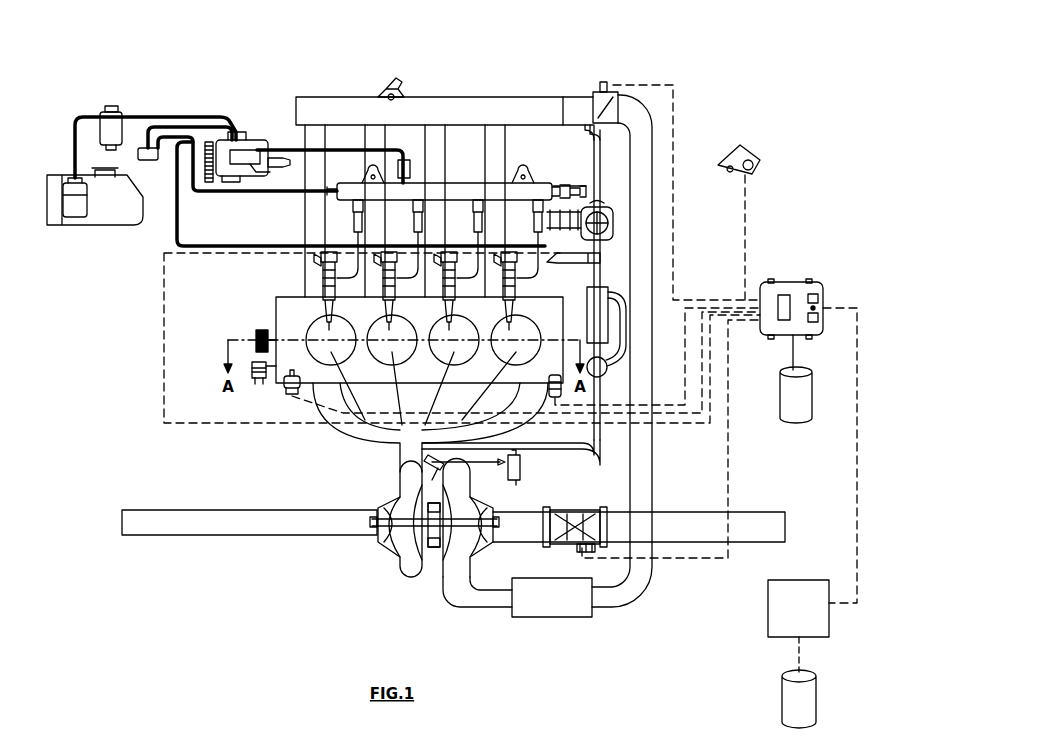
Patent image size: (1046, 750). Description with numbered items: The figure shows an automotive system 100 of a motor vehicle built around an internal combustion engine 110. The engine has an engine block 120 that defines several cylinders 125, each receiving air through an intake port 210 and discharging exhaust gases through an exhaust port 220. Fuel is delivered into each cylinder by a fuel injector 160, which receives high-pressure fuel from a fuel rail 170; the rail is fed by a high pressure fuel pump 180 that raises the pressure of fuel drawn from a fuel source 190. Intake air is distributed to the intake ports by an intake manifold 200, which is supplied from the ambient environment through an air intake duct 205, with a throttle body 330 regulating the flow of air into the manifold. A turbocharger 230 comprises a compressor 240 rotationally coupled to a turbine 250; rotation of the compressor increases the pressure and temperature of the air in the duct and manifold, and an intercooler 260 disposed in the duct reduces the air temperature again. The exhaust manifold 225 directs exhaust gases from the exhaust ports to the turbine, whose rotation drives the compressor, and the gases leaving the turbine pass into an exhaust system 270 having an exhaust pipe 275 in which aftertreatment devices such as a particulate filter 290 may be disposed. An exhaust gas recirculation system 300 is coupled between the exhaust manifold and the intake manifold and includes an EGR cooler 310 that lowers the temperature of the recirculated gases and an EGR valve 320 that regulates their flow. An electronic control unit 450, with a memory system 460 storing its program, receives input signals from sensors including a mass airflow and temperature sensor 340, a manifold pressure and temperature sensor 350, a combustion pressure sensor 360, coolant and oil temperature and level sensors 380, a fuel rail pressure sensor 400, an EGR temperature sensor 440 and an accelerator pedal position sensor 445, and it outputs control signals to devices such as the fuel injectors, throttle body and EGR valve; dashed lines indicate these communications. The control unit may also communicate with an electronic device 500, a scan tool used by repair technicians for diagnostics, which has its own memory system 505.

The automotive system 100 is at (219, 83).
The internal combustion engine 110 is at (518, 85).
The engine block 120 is at (276, 299).
The cylinder 125 is at (520, 332).
The fuel injector 160 is at (330, 283).
The fuel rail 170 is at (330, 197).
The high pressure fuel pump 180 is at (254, 132).
The fuel source 190 is at (117, 210).
The intake manifold 200 is at (436, 112).
The air intake duct 205 is at (755, 528).
The intake port 210 is at (318, 296).
The exhaust port 220 is at (318, 408).
The exhaust manifold 225 is at (392, 430).
The turbocharger 230 is at (403, 582).
The compressor 240 is at (460, 548).
The turbine 250 is at (400, 560).
The intercooler 260 is at (572, 602).
The exhaust system 270 is at (190, 493).
The exhaust pipe 275 is at (134, 523).
The particulate filter 290 is at (441, 462).
The exhaust gas recirculation system 300 is at (571, 452).
The EGR cooler 310 is at (599, 322).
The EGR valve 320 is at (606, 206).
The throttle body 330 is at (605, 82).
The mass airflow and temperature sensor 340 is at (582, 545).
The manifold pressure and temperature sensor 350 is at (384, 85).
The combustion pressure sensor 360 is at (343, 415).
The coolant and oil temperature and level sensors 380 is at (283, 390).
The fuel rail pressure sensor 400 is at (587, 185).
The EGR temperature sensor 440 is at (603, 247).
The accelerator pedal position sensor 445 is at (751, 140).
The electronic control unit 450 is at (793, 282).
The memory system 460 is at (797, 410).
The electronic device 500 is at (787, 597).
The memory system 505 is at (793, 694).